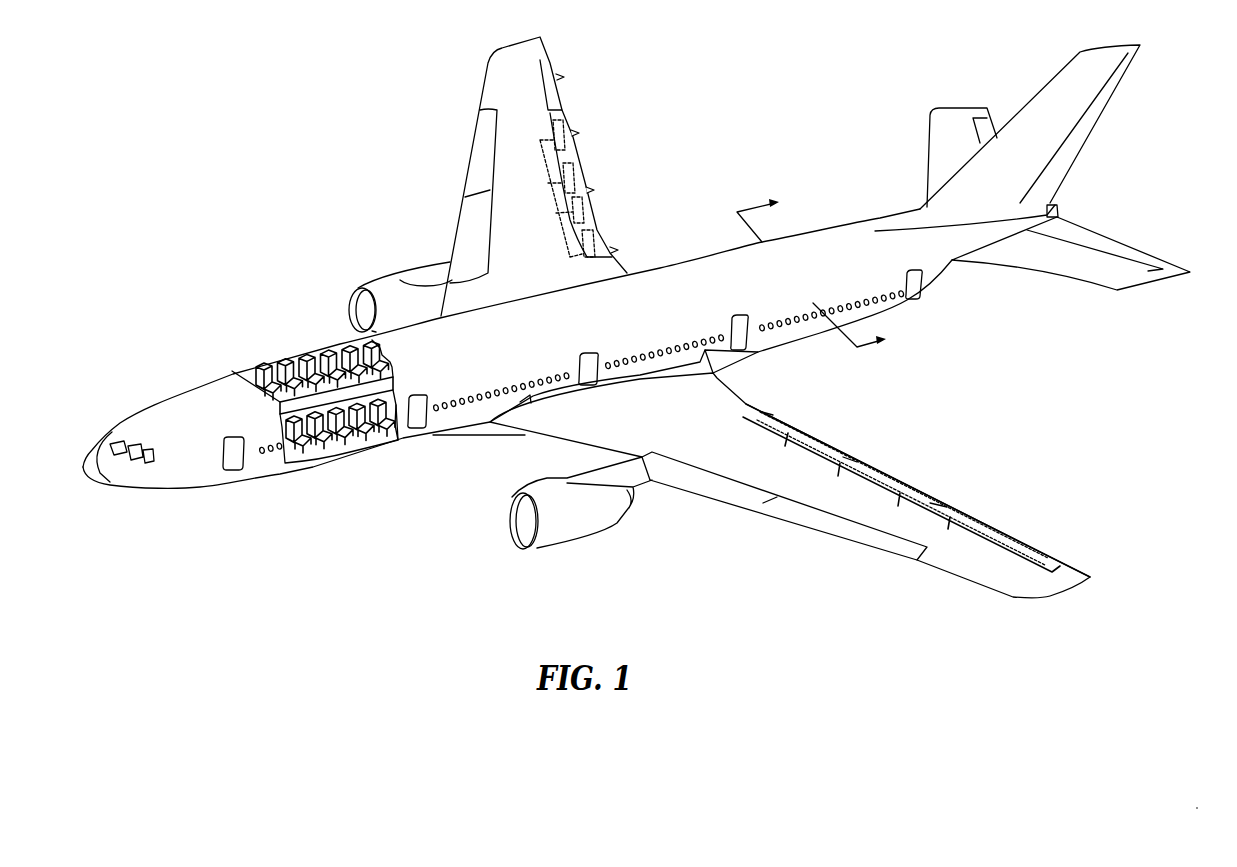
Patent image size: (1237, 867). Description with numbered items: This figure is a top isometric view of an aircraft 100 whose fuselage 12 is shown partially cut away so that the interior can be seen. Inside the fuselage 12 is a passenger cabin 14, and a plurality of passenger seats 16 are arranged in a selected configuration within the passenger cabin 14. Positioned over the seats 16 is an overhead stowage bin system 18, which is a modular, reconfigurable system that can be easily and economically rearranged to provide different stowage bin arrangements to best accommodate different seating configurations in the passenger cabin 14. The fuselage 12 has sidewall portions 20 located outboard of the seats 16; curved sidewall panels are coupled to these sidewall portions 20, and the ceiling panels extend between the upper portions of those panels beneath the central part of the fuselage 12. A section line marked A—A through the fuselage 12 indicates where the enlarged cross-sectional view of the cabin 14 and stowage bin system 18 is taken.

The aircraft 100 is at (260, 158).
The fuselage 12 is at (215, 408).
The passenger cabin 14 is at (394, 358).
The passenger seats 16 is at (345, 455).
The overhead stowage bin system 18 is at (404, 380).
The sidewall portions 20 is at (398, 426).